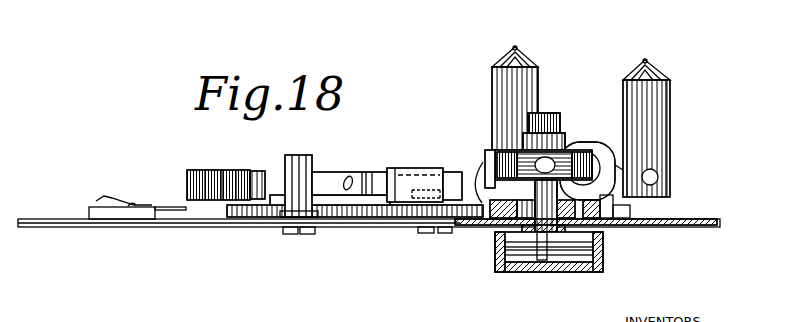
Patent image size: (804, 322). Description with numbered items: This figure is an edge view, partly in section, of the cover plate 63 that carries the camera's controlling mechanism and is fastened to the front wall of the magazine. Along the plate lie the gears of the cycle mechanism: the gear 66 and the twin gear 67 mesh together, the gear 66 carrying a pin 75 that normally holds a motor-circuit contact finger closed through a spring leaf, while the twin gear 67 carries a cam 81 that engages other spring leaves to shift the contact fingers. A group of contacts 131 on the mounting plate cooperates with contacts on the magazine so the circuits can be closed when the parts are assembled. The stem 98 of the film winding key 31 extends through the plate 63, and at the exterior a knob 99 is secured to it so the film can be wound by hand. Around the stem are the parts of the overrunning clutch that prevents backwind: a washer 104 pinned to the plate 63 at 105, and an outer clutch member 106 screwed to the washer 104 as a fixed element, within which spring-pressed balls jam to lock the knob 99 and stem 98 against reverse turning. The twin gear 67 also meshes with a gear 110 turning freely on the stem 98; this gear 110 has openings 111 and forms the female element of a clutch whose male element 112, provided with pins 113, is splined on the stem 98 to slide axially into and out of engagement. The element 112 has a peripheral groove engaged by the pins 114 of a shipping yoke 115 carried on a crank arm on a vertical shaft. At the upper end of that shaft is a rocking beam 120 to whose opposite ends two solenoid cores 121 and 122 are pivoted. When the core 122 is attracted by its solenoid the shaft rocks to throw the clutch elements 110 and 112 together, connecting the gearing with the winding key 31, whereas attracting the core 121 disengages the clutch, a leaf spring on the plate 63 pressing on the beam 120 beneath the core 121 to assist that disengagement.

The cover plate 63 is at (58, 228).
The contacts 131 is at (117, 183).
The pin 75 is at (262, 160).
The gear 66 is at (342, 216).
The twin gear 67 is at (403, 213).
The cam 81 is at (405, 170).
The gear 110 is at (487, 156).
The shipping yoke 115 is at (497, 143).
The solenoid core 121 is at (570, 31).
The film winding key 31 is at (556, 113).
The male clutch element 112 is at (556, 124).
The pins 114 is at (588, 150).
The rocking beam 120 is at (598, 172).
The solenoid core 122 is at (717, 53).
The pins 113 is at (625, 178).
The openings 111 is at (600, 212).
The pin 105 is at (583, 229).
The washer 104 is at (602, 246).
The knob 99 is at (597, 268).
The outer clutch member 106 is at (580, 258).
The stem 98 is at (496, 237).